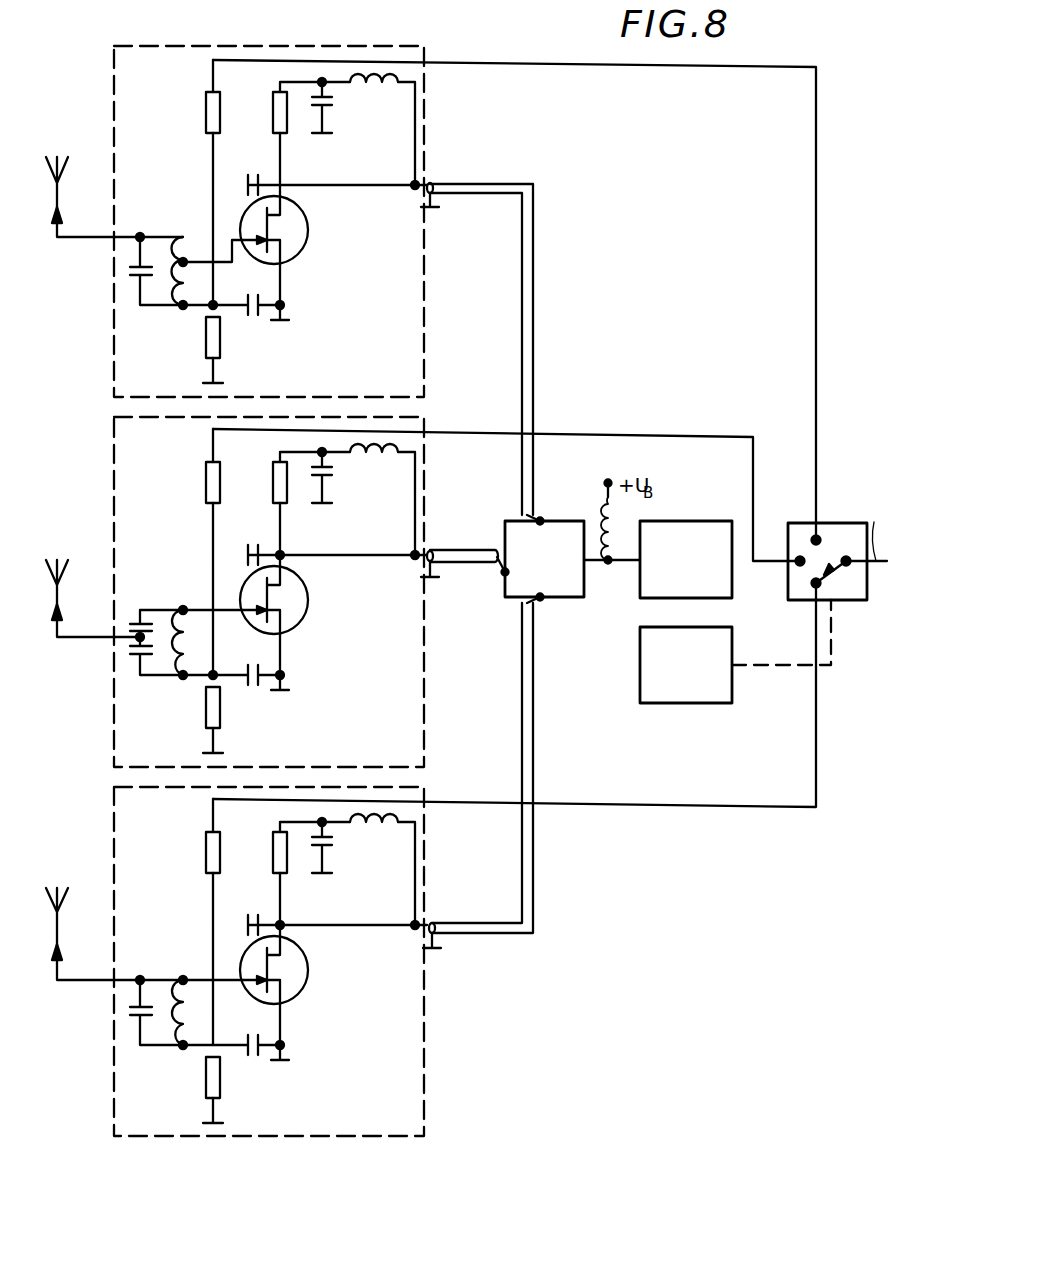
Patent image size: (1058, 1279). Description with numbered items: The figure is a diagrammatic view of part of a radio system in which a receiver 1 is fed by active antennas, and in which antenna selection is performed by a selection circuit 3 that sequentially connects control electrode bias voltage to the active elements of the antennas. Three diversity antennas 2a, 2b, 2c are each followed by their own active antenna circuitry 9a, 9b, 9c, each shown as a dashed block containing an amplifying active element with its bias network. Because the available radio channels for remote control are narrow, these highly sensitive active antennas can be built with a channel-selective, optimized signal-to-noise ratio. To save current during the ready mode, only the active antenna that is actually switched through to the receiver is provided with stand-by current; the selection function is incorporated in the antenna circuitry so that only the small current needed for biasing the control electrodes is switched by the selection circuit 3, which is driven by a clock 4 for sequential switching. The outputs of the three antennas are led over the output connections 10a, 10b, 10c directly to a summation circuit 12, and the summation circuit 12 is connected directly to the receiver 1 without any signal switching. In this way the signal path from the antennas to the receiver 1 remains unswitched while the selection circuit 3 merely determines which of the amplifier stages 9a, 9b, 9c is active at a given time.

The receiver 1 is at (694, 594).
The diversity antenna 2a is at (80, 197).
The diversity antenna 2b is at (80, 598).
The diversity antenna 2c is at (80, 934).
The selection circuit 3 is at (840, 559).
The clock 4 is at (694, 701).
The active antenna circuitry 9a is at (398, 378).
The active antenna circuitry 9b is at (394, 743).
The active antenna circuitry 9c is at (388, 1113).
The antenna output connection 10a is at (530, 368).
The antenna output connection 10b is at (463, 541).
The antenna output connection 10c is at (506, 778).
The summation circuit 12 is at (558, 563).